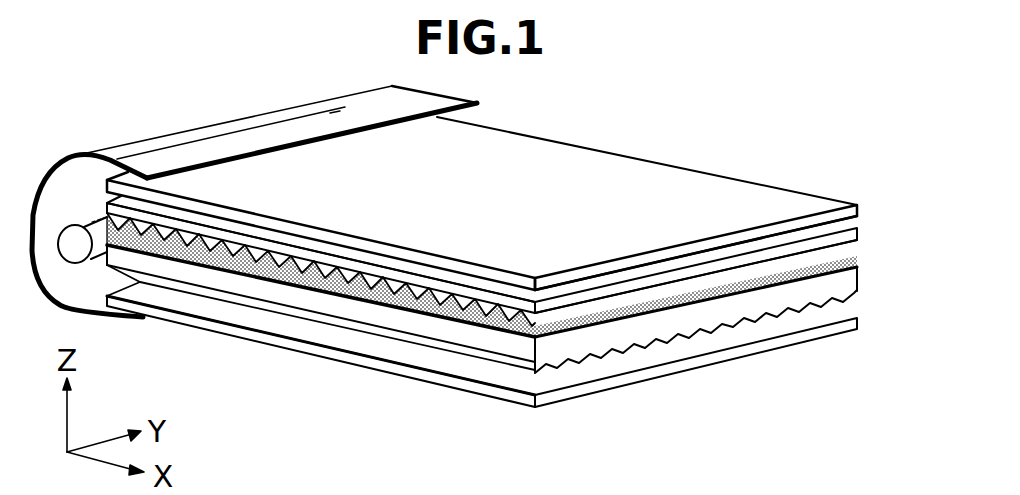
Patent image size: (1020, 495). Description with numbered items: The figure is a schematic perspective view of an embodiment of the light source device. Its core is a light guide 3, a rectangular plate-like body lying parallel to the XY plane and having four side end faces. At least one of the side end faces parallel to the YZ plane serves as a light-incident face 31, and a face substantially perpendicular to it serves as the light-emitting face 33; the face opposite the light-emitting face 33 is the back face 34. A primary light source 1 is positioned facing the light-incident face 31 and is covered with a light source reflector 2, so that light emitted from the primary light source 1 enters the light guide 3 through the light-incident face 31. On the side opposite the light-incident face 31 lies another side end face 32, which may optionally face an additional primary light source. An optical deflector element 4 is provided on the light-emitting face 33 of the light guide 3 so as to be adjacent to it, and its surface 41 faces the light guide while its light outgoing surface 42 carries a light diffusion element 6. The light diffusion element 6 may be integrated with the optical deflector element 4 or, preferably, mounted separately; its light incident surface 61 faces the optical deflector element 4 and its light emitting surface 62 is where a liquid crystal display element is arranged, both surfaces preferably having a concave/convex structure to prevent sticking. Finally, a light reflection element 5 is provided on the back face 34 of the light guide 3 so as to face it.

The primary light source 1 is at (94, 222).
The light source reflector 2 is at (127, 150).
The light guide 3 is at (448, 290).
The light-incident face 31 is at (92, 258).
The another side end face 32 is at (666, 328).
The light-emitting face 33 is at (778, 272).
The back face 34 is at (420, 352).
The optical deflector element 4 is at (482, 289).
The prism surface of prism sheet 41 is at (803, 283).
The light outgoing surface 42 is at (743, 243).
The light reflection element 5 is at (337, 357).
The light diffusion element 6 is at (482, 190).
The light incident surface 61 is at (693, 254).
The light emitting surface 62 is at (603, 166).